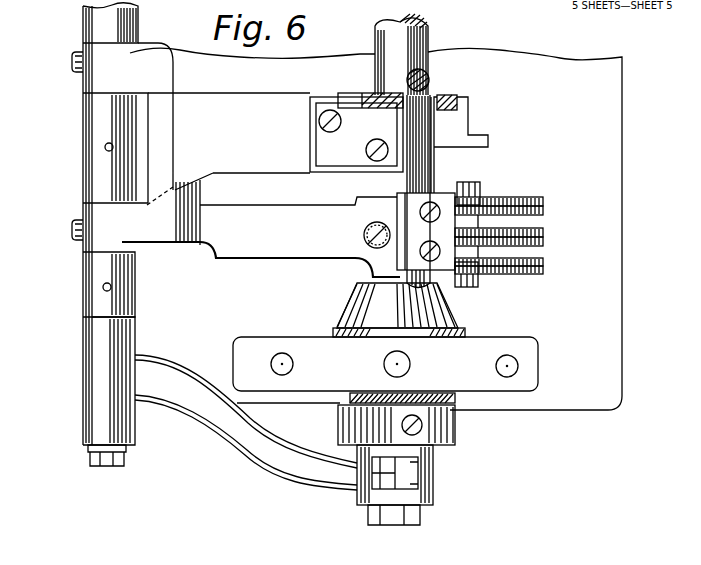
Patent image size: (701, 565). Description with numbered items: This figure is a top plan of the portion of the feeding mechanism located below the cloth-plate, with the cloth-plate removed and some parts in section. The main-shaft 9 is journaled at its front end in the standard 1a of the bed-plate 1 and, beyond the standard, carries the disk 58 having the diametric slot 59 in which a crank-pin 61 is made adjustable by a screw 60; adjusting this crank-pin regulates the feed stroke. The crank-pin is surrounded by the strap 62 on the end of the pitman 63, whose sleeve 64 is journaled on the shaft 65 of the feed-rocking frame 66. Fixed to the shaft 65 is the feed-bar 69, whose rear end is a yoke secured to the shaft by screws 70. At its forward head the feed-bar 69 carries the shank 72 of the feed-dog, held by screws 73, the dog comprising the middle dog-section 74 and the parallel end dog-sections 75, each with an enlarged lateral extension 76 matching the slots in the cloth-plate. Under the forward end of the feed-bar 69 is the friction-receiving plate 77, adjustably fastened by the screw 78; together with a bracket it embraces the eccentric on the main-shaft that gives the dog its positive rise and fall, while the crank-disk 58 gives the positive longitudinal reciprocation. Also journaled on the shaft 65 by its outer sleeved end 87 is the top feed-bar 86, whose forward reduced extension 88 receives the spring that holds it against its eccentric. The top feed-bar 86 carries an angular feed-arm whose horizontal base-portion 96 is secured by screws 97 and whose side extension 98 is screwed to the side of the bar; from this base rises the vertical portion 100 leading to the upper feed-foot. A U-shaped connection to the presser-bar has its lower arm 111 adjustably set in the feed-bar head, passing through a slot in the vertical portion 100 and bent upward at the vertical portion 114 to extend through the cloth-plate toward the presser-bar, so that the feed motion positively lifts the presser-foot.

The bed-plate 1 is at (612, 124).
The standard 1a is at (525, 368).
The main-shaft 9 is at (430, 33).
The disk 58 is at (452, 442).
The diametric slot 59 is at (456, 437).
The screw 60 is at (433, 397).
The crank-pin 61 is at (367, 512).
The strap 62 is at (362, 492).
The pitman 63 is at (260, 446).
The sleeve 64 is at (92, 413).
The shaft 65 is at (88, 449).
The feed-rocking frame 66 is at (97, 277).
The feed-bar 69 is at (272, 248).
The screws 70 is at (73, 58).
The shank 72 is at (443, 198).
The screws 73 is at (408, 257).
The middle dog-section 74 is at (545, 238).
The end dog-sections 75 is at (535, 200).
The enlarged lateral extension 76 is at (482, 186).
The friction-receiving plate 77 is at (362, 268).
The screw 78 is at (397, 222).
The top feed-bar 86 is at (228, 107).
The outer sleeved end 87 is at (100, 127).
The reduced extension 88 is at (488, 141).
The horizontal base-portion 96 is at (322, 152).
The screws 97 is at (319, 121).
The side extension 98 is at (457, 100).
The vertical portion 100 is at (293, 131).
The lower arm 111 is at (418, 136).
The vertical portion 114 is at (432, 75).